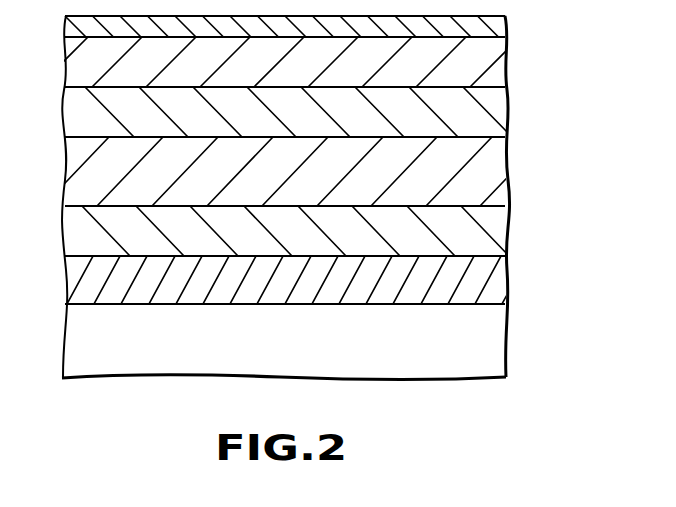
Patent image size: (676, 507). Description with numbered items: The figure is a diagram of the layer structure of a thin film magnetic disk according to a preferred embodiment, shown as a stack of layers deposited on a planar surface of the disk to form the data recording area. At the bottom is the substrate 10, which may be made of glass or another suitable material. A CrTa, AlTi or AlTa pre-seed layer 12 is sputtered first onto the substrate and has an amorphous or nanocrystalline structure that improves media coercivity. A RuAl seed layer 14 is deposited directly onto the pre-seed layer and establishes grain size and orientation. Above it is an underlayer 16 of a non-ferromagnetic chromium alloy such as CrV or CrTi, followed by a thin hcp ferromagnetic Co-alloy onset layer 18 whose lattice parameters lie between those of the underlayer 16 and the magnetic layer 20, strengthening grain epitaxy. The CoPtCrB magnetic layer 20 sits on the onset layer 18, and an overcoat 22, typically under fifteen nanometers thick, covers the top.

The substrate 10 is at (510, 335).
The pre-seed layer 12 is at (510, 275).
The RuAl seed layer 14 is at (505, 225).
The underlayer 16 is at (508, 172).
The onset layer 18 is at (512, 112).
The magnetic layer 20 is at (512, 70).
The overcoat 22 is at (508, 27).